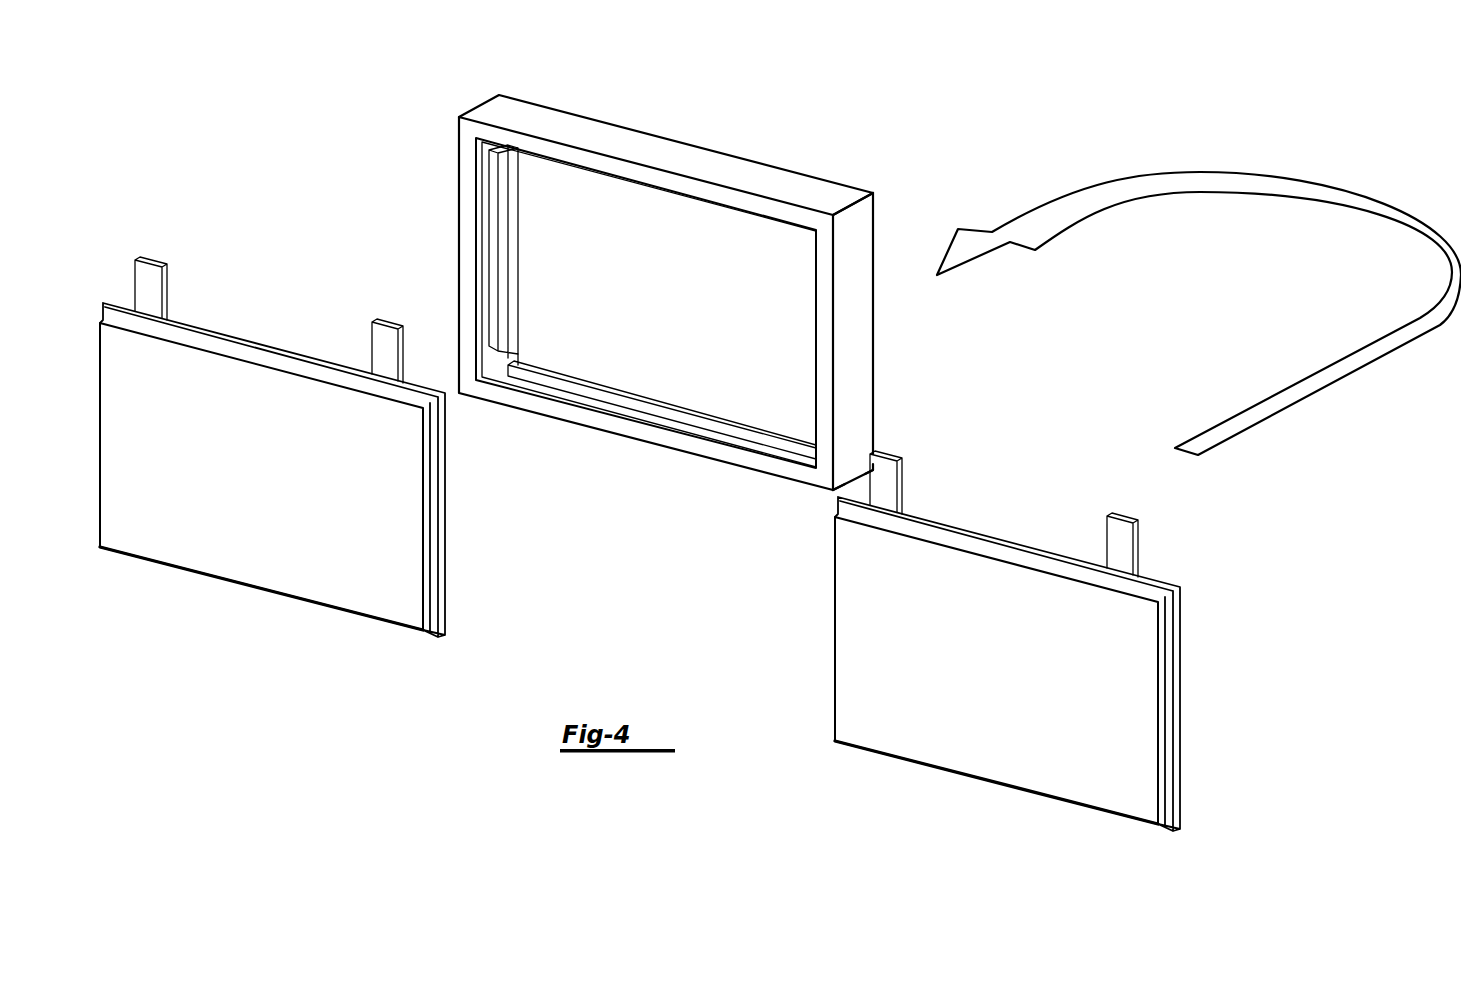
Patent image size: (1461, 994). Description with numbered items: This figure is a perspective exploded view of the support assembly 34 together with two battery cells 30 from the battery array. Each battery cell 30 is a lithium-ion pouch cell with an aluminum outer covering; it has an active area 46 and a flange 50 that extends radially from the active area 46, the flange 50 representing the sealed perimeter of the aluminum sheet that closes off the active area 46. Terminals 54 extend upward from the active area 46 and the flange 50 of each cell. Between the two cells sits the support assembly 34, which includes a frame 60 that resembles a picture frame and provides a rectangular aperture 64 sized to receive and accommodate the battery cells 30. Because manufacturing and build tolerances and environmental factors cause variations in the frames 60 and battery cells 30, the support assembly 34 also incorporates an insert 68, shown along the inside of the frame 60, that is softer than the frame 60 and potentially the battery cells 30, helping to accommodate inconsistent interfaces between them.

The battery cell 30 is at (647, 554).
The support assembly 34 is at (855, 252).
The active area 46 is at (190, 552).
The flange 50 is at (430, 632).
The terminal 54 is at (150, 263).
The frame 60 is at (671, 280).
The aperture 64 is at (548, 236).
The insert 68 is at (508, 300).